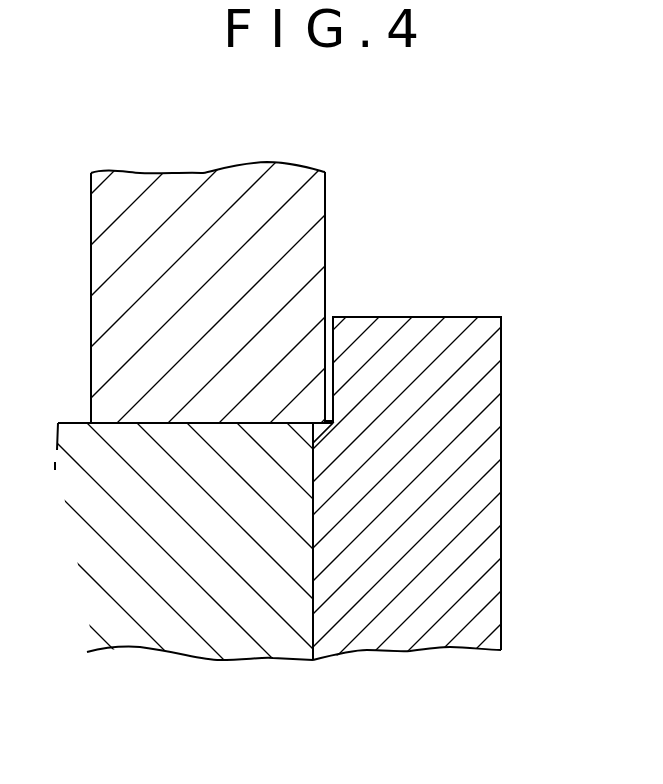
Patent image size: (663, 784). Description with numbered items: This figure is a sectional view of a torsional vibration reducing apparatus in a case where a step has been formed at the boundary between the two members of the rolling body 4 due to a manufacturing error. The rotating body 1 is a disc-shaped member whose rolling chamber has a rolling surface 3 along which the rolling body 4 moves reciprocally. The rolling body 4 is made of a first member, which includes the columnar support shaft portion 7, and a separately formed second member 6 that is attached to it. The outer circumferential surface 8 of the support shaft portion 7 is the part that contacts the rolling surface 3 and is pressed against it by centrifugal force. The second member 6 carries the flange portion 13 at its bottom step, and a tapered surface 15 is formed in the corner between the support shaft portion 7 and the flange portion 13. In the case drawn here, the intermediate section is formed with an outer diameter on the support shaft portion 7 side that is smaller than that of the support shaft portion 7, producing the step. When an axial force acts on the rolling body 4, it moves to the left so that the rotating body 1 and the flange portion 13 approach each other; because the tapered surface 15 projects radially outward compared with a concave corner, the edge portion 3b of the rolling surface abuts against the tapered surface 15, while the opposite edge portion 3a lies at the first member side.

The rotating body 1 is at (315, 205).
The rolling surface 3 is at (177, 424).
The edge portion of the rolling surface 3a is at (90, 422).
The edge portion of the rolling surface 3b is at (323, 418).
The outer circumferential surface 8 is at (72, 422).
The support shaft portion 7 is at (152, 558).
The rolling body 4 is at (512, 348).
The flange portion 13 is at (442, 340).
The second member 6 is at (447, 533).
The tapered surface 15 is at (316, 440).